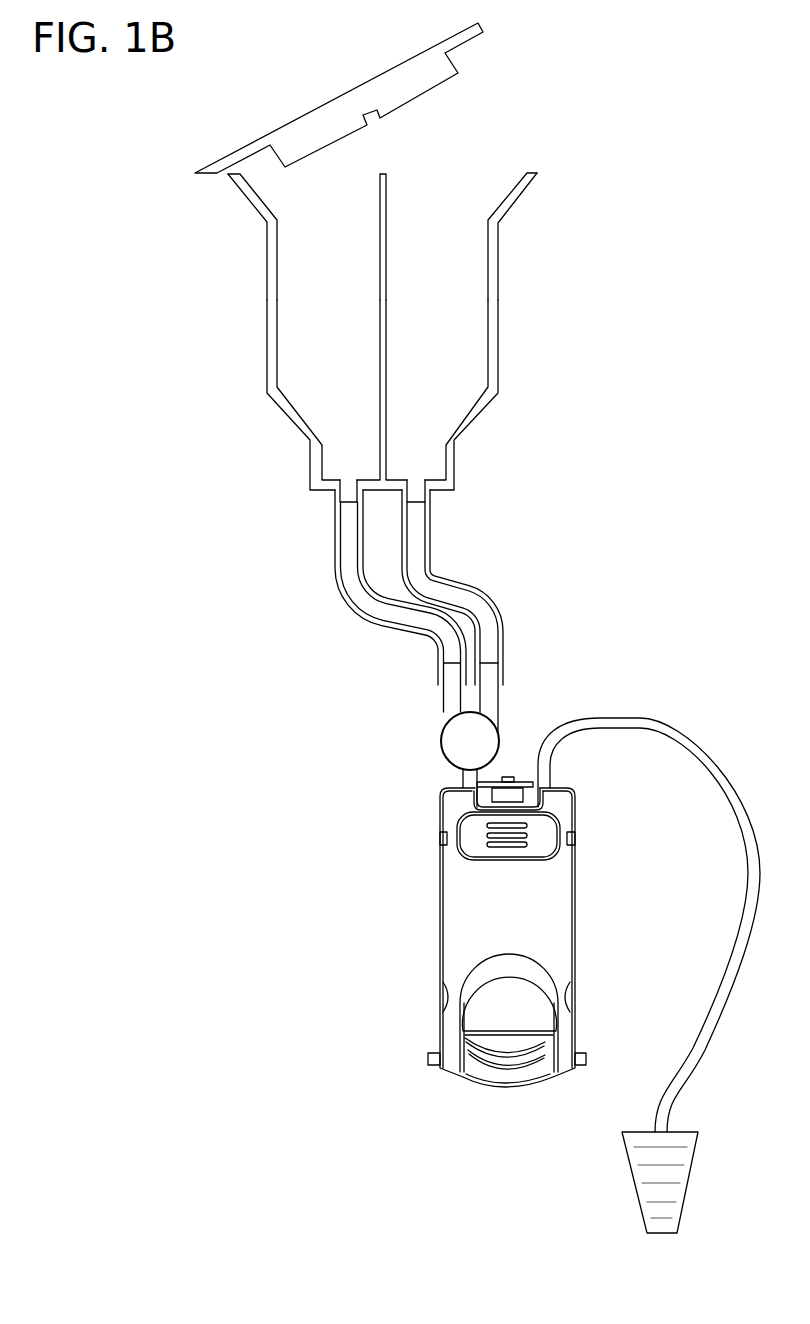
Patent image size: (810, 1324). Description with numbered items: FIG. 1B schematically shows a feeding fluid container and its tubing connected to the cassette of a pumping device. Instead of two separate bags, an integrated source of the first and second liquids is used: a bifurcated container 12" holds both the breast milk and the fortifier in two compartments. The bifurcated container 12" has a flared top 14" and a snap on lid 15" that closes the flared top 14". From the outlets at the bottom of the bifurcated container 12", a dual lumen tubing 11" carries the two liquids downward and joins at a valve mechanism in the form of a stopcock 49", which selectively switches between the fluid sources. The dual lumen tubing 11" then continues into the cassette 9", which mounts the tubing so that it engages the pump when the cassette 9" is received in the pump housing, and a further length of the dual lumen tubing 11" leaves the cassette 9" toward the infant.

The snap on lid 15 is at (256, 141).
The flared top 14 is at (245, 196).
The bifurcated container 12 is at (267, 368).
The dual lumen tubing 11 is at (349, 608).
The stopcock 49 is at (441, 748).
The cassette 9 is at (580, 905).